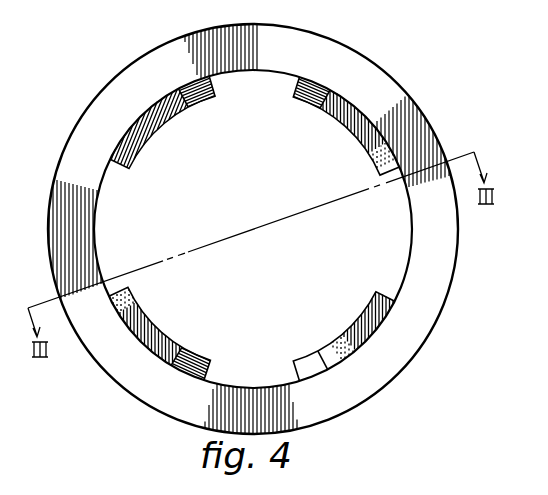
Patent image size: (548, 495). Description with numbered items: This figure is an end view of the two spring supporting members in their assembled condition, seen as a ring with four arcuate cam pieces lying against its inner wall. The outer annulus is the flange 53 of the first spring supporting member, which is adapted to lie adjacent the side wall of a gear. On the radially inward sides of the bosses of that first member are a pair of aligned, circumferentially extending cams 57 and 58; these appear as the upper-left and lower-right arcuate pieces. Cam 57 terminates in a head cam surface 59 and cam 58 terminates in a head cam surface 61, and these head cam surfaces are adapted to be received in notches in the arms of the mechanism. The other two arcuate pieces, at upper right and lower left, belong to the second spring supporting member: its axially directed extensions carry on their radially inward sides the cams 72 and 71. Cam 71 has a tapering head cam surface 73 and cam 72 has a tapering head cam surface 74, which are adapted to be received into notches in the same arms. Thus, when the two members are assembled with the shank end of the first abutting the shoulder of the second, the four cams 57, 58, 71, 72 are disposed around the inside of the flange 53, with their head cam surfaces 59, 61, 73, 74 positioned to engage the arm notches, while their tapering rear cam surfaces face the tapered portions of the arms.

The flange 53 is at (339, 53).
The cam 57 is at (173, 126).
The head cam surface 59 is at (202, 96).
The cam 72 is at (379, 145).
The tapering head cam surface 74 is at (311, 92).
The cam 71 is at (133, 311).
The tapering head cam surface 73 is at (190, 362).
The cam 58 is at (380, 310).
The head cam surface 61 is at (311, 366).